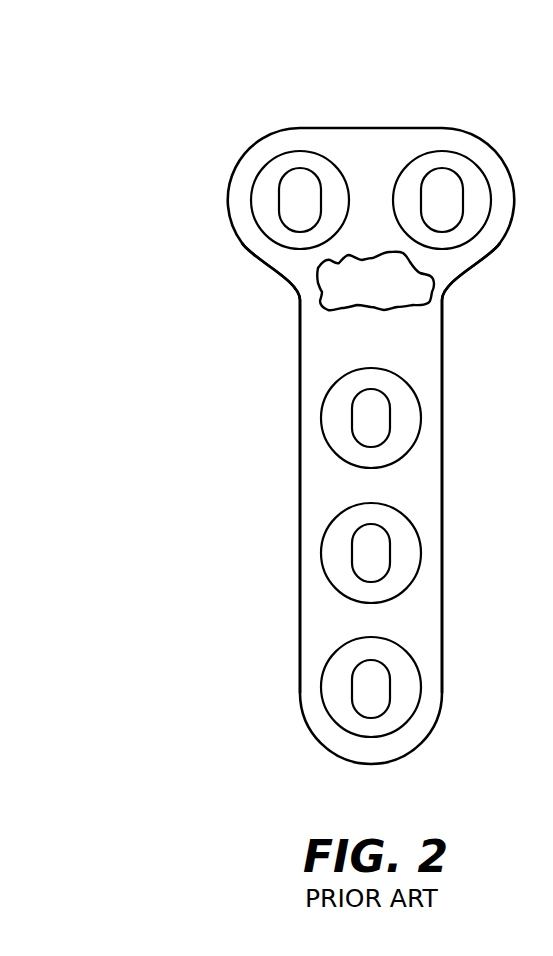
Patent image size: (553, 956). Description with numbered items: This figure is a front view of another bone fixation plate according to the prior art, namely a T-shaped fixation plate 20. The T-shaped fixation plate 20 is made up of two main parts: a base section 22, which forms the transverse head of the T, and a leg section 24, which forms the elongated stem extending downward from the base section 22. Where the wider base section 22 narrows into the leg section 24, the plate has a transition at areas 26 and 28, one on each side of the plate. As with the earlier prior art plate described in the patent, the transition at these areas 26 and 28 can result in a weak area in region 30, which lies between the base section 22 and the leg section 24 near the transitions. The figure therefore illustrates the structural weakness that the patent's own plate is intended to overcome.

The T-shaped fixation plate 20 is at (423, 110).
The base section 22 is at (237, 242).
The leg section 24 is at (300, 490).
The transition area 26 is at (450, 280).
The transition area 28 is at (290, 285).
The weak area region 30 is at (320, 298).